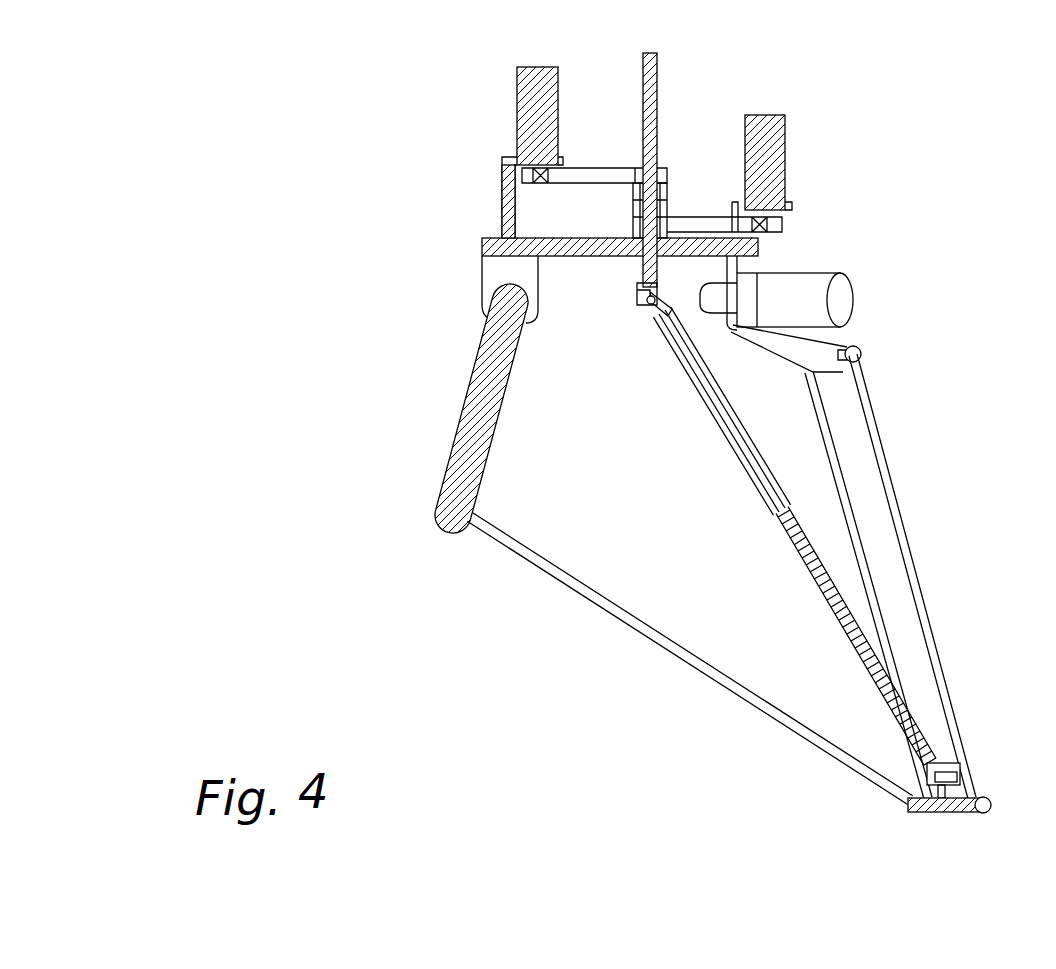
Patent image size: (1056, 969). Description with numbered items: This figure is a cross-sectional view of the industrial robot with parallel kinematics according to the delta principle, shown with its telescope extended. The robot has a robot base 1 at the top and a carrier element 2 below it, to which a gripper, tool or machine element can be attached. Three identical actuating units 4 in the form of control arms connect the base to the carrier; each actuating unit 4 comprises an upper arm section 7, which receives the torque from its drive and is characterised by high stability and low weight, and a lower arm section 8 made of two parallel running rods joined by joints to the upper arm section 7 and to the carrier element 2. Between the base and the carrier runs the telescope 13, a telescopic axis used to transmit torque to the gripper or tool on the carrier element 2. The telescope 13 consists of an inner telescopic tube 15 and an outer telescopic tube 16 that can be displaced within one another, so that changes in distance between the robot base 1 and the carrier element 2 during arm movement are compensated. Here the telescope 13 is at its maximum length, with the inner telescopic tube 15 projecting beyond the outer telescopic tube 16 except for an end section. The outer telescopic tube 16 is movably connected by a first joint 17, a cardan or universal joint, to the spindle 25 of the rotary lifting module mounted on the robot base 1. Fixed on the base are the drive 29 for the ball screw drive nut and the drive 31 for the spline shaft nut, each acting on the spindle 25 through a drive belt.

The robot base 1 is at (493, 247).
The carrier element 2 is at (948, 806).
The actuating unit 4 is at (913, 424).
The upper arm section 7 is at (495, 378).
The lower arm section 8 is at (600, 618).
The telescope 13 is at (746, 524).
The inner telescopic tube 15 is at (833, 600).
The outer telescopic tube 16 is at (733, 437).
The first joint 17 is at (630, 321).
The spindle 25 is at (653, 83).
The drive for the ball screw drive nut 29 is at (540, 103).
The drive for the spline shaft nut 31 is at (775, 165).